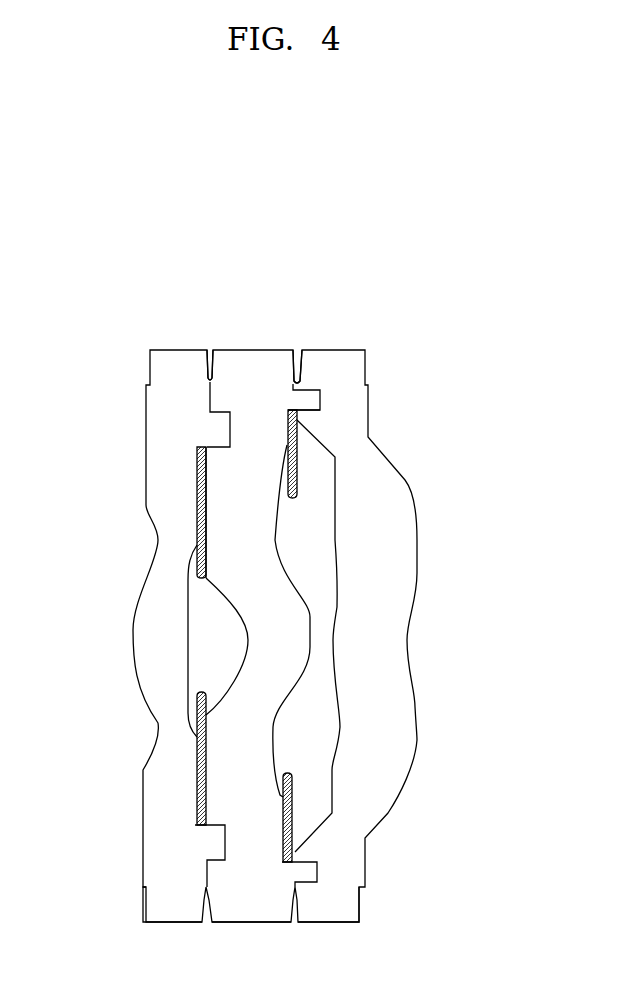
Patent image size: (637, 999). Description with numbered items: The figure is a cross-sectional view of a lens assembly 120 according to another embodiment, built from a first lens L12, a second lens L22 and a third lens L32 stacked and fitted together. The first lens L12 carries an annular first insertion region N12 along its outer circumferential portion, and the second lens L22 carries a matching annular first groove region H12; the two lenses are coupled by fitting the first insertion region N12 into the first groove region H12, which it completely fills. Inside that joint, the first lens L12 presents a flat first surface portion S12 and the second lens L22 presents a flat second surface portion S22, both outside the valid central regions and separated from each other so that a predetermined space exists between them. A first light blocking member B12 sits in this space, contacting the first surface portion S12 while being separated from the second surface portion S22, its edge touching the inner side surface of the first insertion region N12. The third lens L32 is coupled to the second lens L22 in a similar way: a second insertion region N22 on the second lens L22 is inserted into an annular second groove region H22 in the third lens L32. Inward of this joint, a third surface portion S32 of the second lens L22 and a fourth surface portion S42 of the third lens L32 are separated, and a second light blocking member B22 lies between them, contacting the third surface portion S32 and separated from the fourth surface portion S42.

The lens assembly 120 is at (413, 322).
The first groove region H12 is at (237, 423).
The second insertion region N22 is at (310, 402).
The second groove region H22 is at (328, 393).
The first insertion region N12 is at (213, 428).
The fourth surface portion S42 is at (300, 418).
The third surface portion S32 is at (283, 435).
The second light blocking member B22 is at (293, 485).
The first surface portion S12 is at (197, 500).
The second surface portion S22 is at (208, 500).
The first light blocking member B12 is at (195, 560).
The first lens L12 is at (175, 925).
The second lens L22 is at (248, 925).
The third lens L32 is at (323, 925).